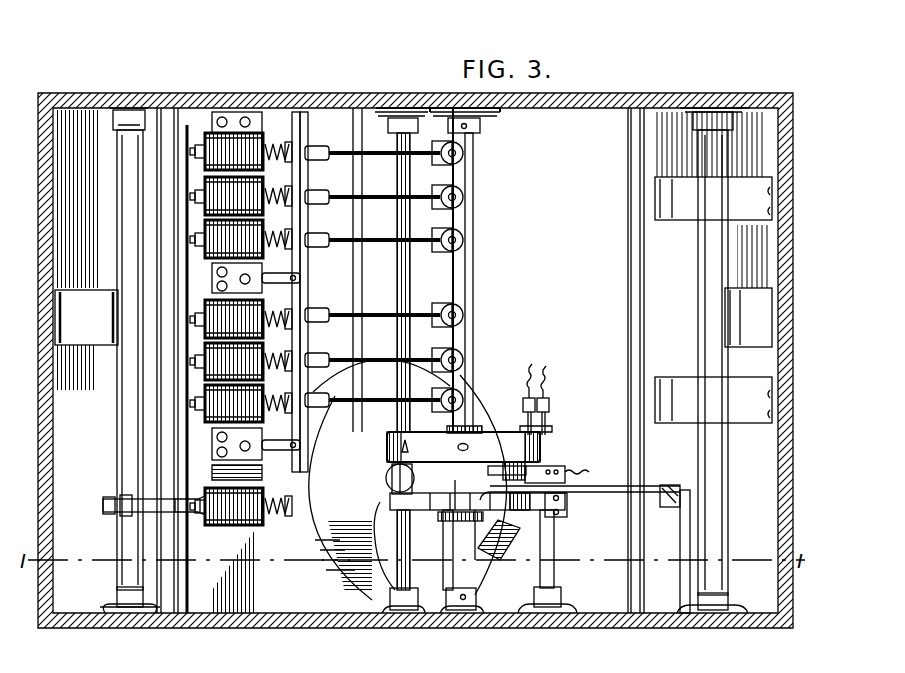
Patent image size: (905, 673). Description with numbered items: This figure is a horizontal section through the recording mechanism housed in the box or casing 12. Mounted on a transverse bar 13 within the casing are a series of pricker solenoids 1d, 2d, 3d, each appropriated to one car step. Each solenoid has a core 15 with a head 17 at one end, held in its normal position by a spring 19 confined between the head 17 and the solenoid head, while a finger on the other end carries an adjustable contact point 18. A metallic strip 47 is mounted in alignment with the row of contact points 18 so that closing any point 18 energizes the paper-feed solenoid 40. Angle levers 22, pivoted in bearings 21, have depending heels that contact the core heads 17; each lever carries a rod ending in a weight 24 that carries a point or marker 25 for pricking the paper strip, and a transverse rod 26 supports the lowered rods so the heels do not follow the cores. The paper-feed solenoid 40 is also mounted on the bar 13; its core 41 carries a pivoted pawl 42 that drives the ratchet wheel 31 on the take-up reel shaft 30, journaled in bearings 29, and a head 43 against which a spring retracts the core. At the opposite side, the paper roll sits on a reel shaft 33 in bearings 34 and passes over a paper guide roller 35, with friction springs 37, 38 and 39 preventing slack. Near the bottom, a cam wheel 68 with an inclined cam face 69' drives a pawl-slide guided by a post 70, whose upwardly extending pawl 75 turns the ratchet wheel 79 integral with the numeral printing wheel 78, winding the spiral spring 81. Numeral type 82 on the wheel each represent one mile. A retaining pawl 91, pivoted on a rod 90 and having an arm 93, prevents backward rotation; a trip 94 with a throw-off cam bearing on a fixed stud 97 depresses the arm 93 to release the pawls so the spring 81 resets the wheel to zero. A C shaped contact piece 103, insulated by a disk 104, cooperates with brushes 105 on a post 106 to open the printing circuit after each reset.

The box or casing 12 is at (137, 628).
The transverse bar 13 is at (235, 600).
The solenoid 1d is at (227, 112).
The solenoid 2d is at (233, 192).
The solenoid 3d is at (235, 237).
The core 15 is at (266, 140).
The head 17 is at (297, 305).
The adjustable contact point 18 is at (235, 401).
The spring 19 is at (300, 112).
The bearings 21 is at (287, 470).
The angle levers 22 is at (322, 146).
The weight 24 is at (460, 307).
The point or marker 25 is at (462, 244).
The transverse rod 26 is at (352, 600).
The bearings 29 is at (128, 110).
The reel shaft 30 is at (118, 537).
The ratchet wheel 31 is at (103, 507).
The reel shaft 33 is at (722, 528).
The bearings 34 is at (714, 115).
The paper guide roller 35 is at (628, 287).
The friction spring 37 is at (86, 250).
The friction spring 38 is at (713, 267).
The friction spring 39 is at (740, 318).
The paper-feed solenoid 40 is at (242, 525).
The core 41 is at (197, 514).
The pivoted pawl 42 is at (127, 497).
The head 43 is at (290, 505).
The metallic strip 47 is at (193, 122).
The cam wheel 68 is at (336, 578).
The inclined face 69' is at (503, 554).
The post 70 is at (540, 512).
The pawl 75 is at (502, 521).
The numeral printing wheel 78 is at (540, 439).
The ratchet wheel 79 is at (457, 518).
The spiral spring 81 is at (483, 602).
The numeral type 82 is at (542, 465).
The rod 90 is at (412, 173).
The retaining pawl 91 is at (378, 612).
The extension or arm 93 is at (607, 492).
The trip 94 is at (666, 485).
The fixed rod or stud 97 is at (680, 580).
The C shaped contact piece 103 is at (490, 432).
The disk 104 is at (538, 432).
The insulated brushes 105 is at (533, 392).
The post 106 is at (547, 406).